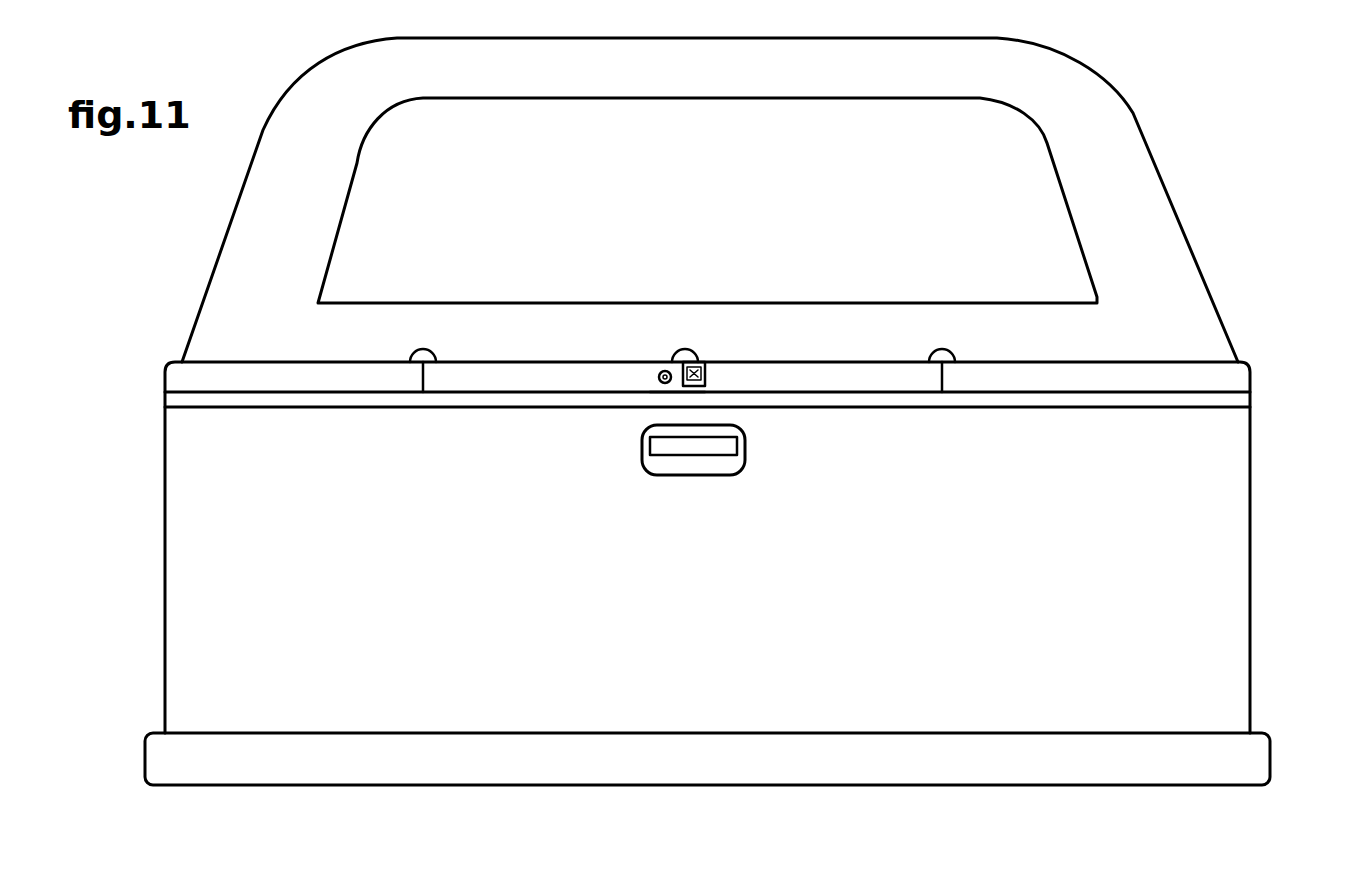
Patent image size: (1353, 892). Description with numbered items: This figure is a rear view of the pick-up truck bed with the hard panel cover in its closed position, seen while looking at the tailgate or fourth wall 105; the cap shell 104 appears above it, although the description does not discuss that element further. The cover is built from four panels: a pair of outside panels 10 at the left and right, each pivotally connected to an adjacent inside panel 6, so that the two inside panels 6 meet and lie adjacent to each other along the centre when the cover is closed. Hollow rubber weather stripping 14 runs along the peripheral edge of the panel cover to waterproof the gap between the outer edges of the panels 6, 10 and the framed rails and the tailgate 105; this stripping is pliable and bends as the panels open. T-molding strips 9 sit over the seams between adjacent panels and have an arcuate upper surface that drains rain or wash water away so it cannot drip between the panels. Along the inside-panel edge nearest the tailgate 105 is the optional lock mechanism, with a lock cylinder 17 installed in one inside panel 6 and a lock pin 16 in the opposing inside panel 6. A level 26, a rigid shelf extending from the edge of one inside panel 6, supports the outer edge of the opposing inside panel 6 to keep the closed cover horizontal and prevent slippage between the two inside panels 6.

The cap shell / canopy 104 is at (1097, 105).
The tailgate 105 is at (1225, 538).
The weather stripping 14 is at (1180, 398).
The outside panel 10 is at (315, 380).
The inside panel 6 is at (487, 382).
The T-molding strip 9 is at (421, 352).
The lock pin 16 is at (707, 385).
The lock cylinder 17 is at (660, 372).
The level 26 is at (680, 390).